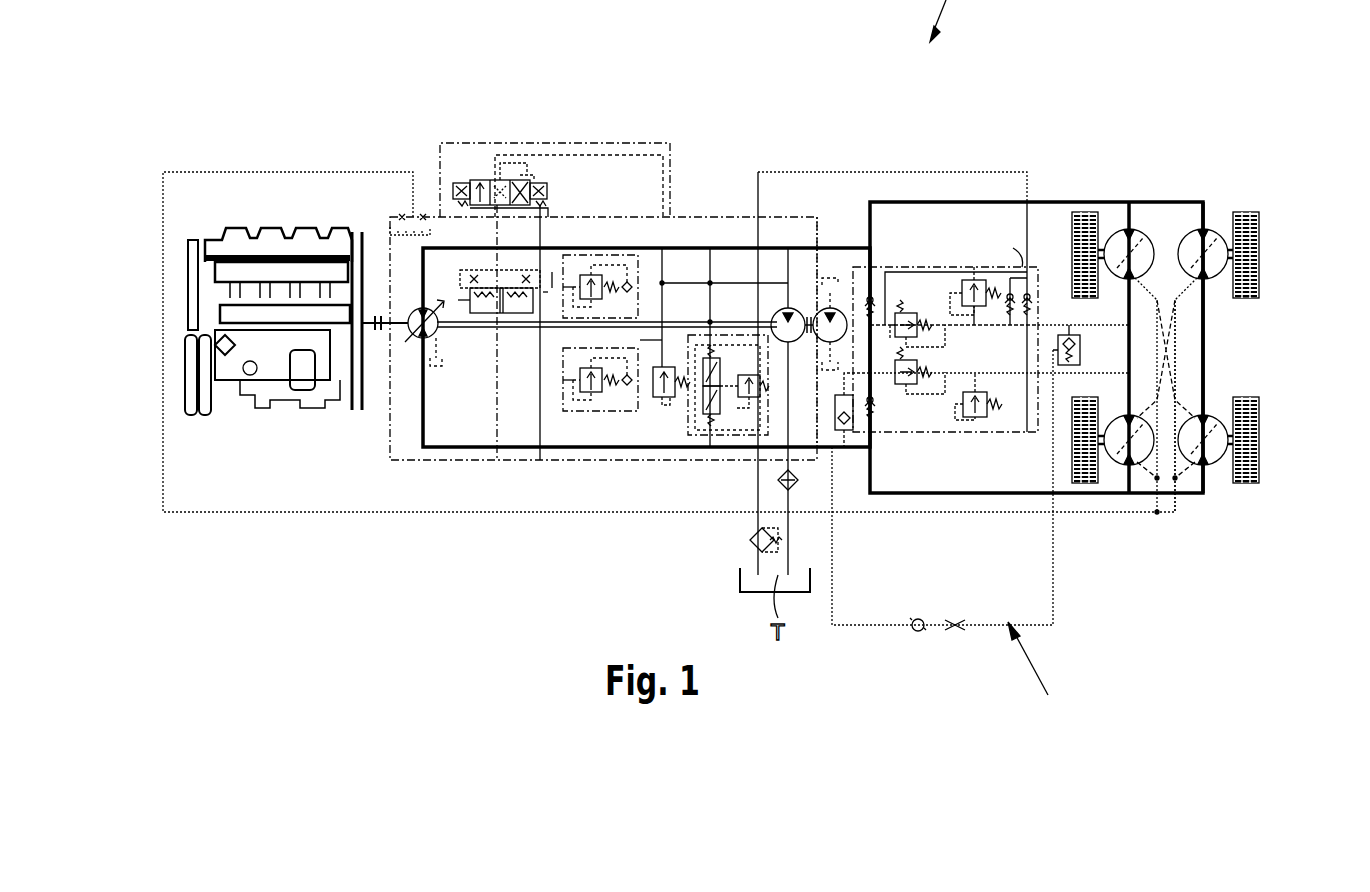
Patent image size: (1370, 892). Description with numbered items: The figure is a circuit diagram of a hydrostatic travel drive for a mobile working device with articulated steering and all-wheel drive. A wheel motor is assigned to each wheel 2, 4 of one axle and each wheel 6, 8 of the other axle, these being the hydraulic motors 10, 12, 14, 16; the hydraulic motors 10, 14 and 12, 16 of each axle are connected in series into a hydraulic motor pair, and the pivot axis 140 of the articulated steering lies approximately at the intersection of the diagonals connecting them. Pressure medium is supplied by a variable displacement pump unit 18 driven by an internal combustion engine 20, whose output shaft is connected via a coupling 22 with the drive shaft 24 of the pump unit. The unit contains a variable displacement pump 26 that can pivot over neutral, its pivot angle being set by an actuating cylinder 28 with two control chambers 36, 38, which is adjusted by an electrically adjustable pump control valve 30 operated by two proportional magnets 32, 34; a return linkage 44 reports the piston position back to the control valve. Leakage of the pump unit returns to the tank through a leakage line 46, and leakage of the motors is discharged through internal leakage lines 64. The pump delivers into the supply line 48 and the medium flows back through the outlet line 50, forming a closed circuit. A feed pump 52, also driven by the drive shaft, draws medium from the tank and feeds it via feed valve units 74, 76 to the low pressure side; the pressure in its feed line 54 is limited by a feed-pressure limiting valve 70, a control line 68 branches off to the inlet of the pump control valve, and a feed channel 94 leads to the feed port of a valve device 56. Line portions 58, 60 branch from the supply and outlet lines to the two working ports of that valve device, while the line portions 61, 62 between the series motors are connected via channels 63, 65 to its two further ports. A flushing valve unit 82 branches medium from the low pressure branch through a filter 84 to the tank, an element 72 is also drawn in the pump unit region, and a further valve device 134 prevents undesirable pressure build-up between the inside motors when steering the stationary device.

The wheel 2 is at (1082, 212).
The wheel 4 is at (1248, 212).
The wheel 6 is at (1085, 493).
The wheel 8 is at (1250, 493).
The hydraulic motor 10 is at (1140, 232).
The hydraulic motor 12 is at (1213, 232).
The hydraulic motor 14 is at (1140, 493).
The hydraulic motor 16 is at (1215, 493).
The variable displacement pump unit 18 is at (508, 460).
The internal combustion engine 20 is at (265, 235).
The coupling 22 is at (386, 322).
The drive shaft 24 is at (398, 338).
The variable displacement pump 26 is at (400, 345).
The actuating cylinder 28 is at (493, 313).
The pump control valve 30 is at (481, 140).
The proportional magnet 32 is at (462, 205).
The proportional magnet 34 is at (545, 195).
The control chamber 36 is at (492, 263).
The control chamber 38 is at (543, 292).
The return linkage 44 is at (552, 272).
The leakage line 46 is at (190, 172).
The supply line 48 is at (768, 265).
The outlet line 50 is at (838, 450).
The feed pump 52 is at (773, 313).
The feed line 54 is at (710, 240).
The valve device 56 is at (967, 425).
The line portion 58 is at (963, 357).
The line portion 60 is at (872, 420).
The line portion 61 is at (1132, 307).
The line portion 62 is at (1205, 390).
The channel 63 is at (1100, 325).
The internal leakage line 64 is at (1037, 513).
The channel 65 is at (1100, 373).
The control line 68 is at (600, 155).
The feed-pressure limiting valve 70 is at (672, 397).
The valve unit 72 is at (701, 453).
The feed valve unit 74 is at (613, 255).
The feed valve unit 76 is at (582, 412).
The flushing valve unit 82 is at (758, 364).
The filter 84 is at (750, 538).
The feed channel 94 is at (963, 347).
The valve device 134 is at (1031, 675).
The pivot axis 140 is at (1168, 347).